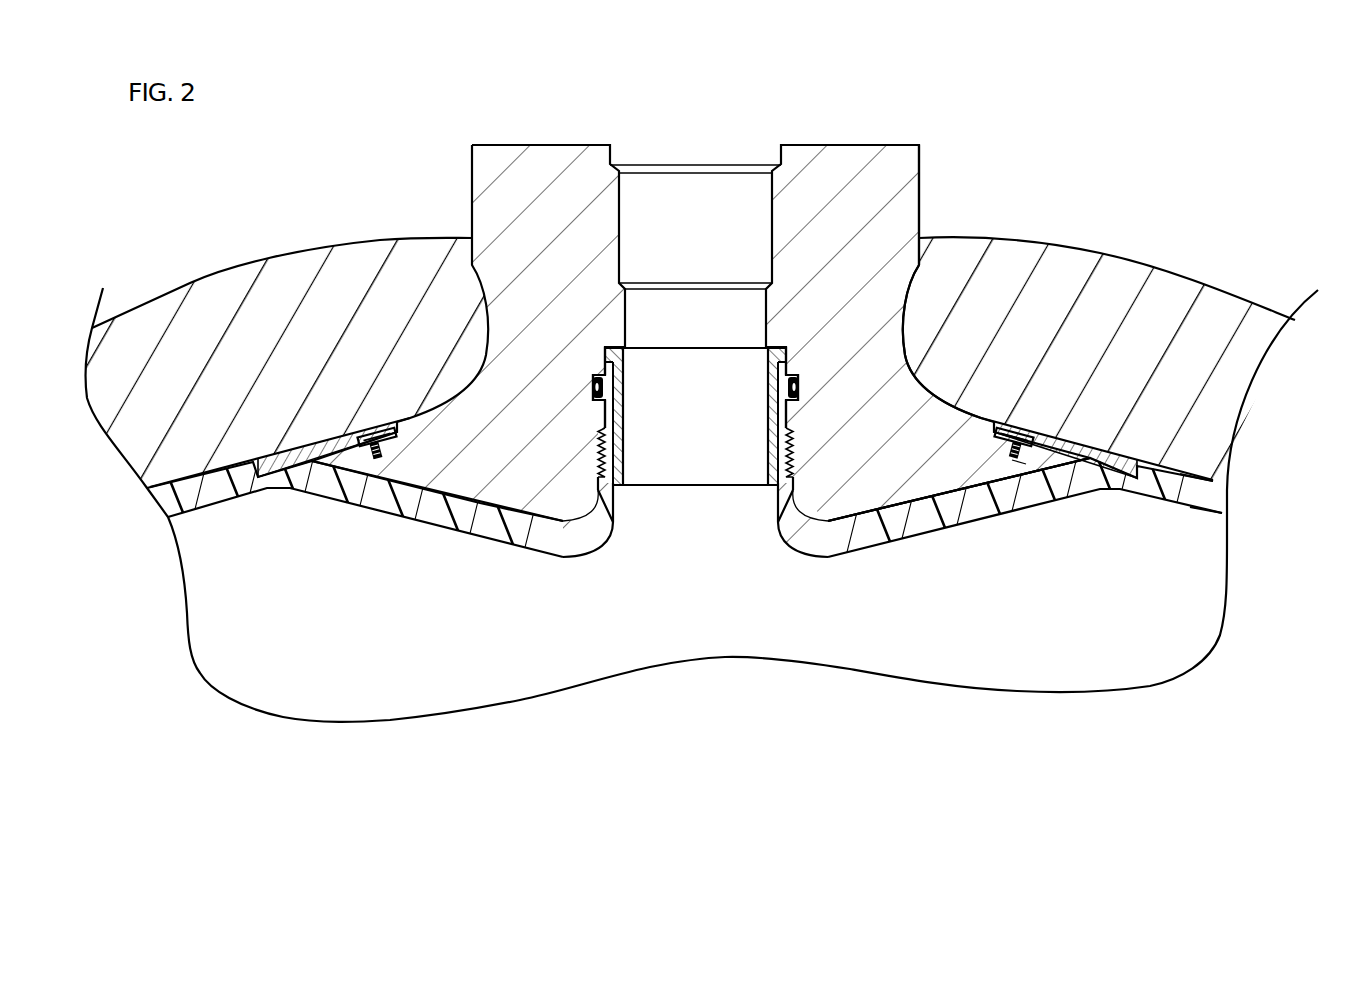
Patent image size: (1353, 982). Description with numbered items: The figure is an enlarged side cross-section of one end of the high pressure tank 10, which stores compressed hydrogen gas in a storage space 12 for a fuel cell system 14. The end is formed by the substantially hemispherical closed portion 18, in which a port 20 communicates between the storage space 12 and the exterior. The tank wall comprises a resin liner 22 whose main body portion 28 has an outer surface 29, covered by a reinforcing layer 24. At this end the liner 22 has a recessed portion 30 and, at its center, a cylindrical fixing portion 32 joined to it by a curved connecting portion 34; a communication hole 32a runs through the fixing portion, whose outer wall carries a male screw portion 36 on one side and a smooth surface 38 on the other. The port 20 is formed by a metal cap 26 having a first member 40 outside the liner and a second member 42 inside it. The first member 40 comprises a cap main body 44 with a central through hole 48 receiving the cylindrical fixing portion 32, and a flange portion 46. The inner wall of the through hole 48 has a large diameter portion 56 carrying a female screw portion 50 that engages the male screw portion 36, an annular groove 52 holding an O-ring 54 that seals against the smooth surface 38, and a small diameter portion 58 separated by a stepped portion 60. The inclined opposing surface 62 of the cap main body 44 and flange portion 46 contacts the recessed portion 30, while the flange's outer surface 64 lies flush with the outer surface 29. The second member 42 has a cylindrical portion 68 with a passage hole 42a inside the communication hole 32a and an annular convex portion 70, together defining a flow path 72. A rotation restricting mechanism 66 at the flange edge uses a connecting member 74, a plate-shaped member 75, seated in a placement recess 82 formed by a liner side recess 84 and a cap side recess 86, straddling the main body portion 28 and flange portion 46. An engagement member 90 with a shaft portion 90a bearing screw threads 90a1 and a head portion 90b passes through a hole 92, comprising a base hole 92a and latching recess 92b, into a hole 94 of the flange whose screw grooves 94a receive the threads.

The high pressure tank 10 is at (308, 129).
The fuel cell system 14 is at (350, 129).
The storage space 12 is at (213, 612).
The liner 22 is at (213, 520).
The main body portion 28 is at (1178, 494).
The outer surface 29 is at (1190, 480).
The port 20 is at (701, 340).
The cap 26 is at (527, 138).
The through hole 48 is at (663, 190).
The first member 40 is at (829, 163).
The cap main body 44 is at (878, 260).
The flange portion 46 is at (946, 440).
The outer surface 64 is at (963, 485).
The recessed portion 30 is at (886, 524).
The cylindrical fixing portion 32 is at (794, 474).
The male screw portion 36 is at (600, 452).
The smooth surface 38 is at (600, 412).
The communication hole 32a is at (792, 492).
The curved connecting portion 34 is at (581, 540).
The opposing surface 62 is at (843, 548).
The reinforcing layer 24 is at (238, 253).
The closed portion 18 is at (380, 240).
The rotation restricting mechanism 66 is at (326, 430).
The connecting member 74 is at (732, 377).
The plate-shaped member 75 is at (276, 470).
The placement recess 82 is at (1206, 226).
The cap side recess 86 is at (1088, 442).
The liner side recess 84 is at (1125, 462).
The second member 42 is at (620, 350).
The annular convex portion 70 is at (604, 352).
The stepped portion 60 is at (780, 360).
The female screw portion 50 is at (614, 440).
The large diameter portion 56 is at (778, 418).
The cylindrical portion 68 is at (623, 470).
The flow path 72 is at (695, 374).
The small diameter portion 58 is at (770, 300).
The passage hole 42a is at (683, 460).
The annular groove 52 is at (603, 388).
The O-ring 54 is at (797, 387).
The engagement member 90 is at (380, 471).
The head portion 90b is at (371, 432).
The shaft portion 90a is at (376, 457).
The screw thread 90a1 is at (370, 452).
The hole 92 is at (1005, 463).
The latching recess 92b is at (1020, 432).
The base hole 92a is at (1013, 453).
The hole 94 is at (1024, 523).
The screw groove 94a is at (1021, 460).